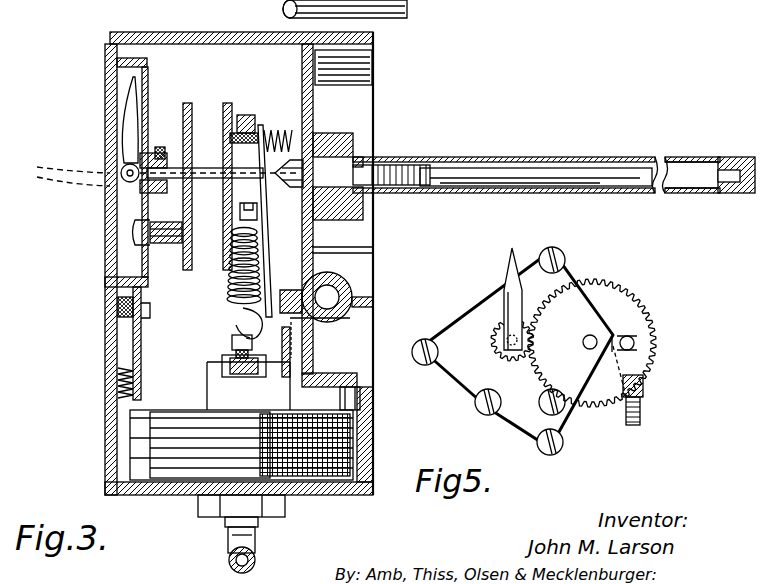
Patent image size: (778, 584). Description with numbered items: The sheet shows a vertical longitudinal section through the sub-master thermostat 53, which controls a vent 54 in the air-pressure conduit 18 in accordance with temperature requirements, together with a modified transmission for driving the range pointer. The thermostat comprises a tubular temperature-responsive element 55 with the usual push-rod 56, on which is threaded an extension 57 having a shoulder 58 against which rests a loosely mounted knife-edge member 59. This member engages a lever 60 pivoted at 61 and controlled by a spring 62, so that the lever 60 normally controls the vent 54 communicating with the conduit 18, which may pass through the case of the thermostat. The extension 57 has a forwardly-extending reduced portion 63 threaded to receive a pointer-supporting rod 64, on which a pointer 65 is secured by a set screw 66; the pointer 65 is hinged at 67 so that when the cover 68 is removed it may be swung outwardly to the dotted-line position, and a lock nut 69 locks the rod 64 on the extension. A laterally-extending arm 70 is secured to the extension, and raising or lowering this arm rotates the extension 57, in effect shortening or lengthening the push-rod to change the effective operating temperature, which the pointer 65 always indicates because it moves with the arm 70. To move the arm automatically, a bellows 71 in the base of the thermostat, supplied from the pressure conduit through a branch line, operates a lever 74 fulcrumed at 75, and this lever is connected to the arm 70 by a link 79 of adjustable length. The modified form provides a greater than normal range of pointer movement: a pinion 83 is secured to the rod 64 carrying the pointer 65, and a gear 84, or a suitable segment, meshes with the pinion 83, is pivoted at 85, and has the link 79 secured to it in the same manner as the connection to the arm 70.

In FIG. 3, the conduit 18 is at (332, 297).
In FIG. 3, the sub-master thermostat 53 is at (380, 71).
In FIG. 3, the vent 54 is at (335, 319).
In FIG. 3, the tubular temperature-responsive element 55 is at (490, 157).
In FIG. 3, the push-rod 56 is at (505, 190).
In FIG. 3, the extension 57 is at (376, 165).
In FIG. 3, the shoulder 58 is at (320, 150).
In FIG. 3, the knife-edge member 59 is at (300, 162).
In FIG. 3, the lever 60 is at (270, 263).
In FIG. 3, the pivot 61 is at (240, 120).
In FIG. 3, the spring 62 is at (277, 132).
In FIG. 3, the reduced portion 63 is at (248, 207).
In FIG. 3, the pointer-supporting rod 64 is at (200, 170).
In FIG. 3, the pointer 65 is at (130, 106).
In FIG. 5, the pointer 65 is at (506, 258).
In FIG. 3, the set screw 66 is at (157, 145).
In FIG. 3, the hinge 67 is at (124, 168).
In FIG. 3, the cover 68 is at (110, 284).
In FIG. 3, the lock nut 69 is at (238, 212).
In FIG. 3, the laterally-extending arm 70 is at (186, 220).
In FIG. 3, the bellows 71 is at (230, 418).
In FIG. 3, the lever 74 is at (230, 344).
In FIG. 3, the fulcrum 75 is at (263, 330).
In FIG. 5, the link 79 is at (648, 394).
In FIG. 5, the pinion 83 is at (500, 356).
In FIG. 5, the gear 84 is at (622, 300).
In FIG. 5, the pivot 85 is at (597, 340).